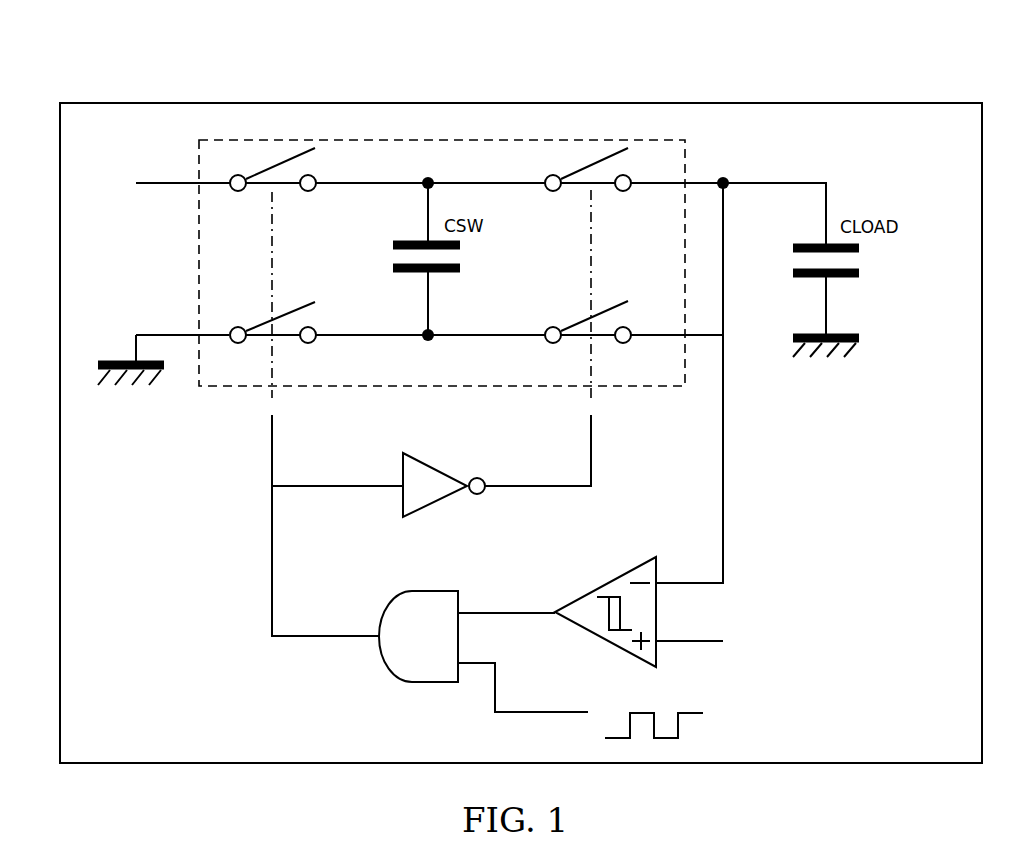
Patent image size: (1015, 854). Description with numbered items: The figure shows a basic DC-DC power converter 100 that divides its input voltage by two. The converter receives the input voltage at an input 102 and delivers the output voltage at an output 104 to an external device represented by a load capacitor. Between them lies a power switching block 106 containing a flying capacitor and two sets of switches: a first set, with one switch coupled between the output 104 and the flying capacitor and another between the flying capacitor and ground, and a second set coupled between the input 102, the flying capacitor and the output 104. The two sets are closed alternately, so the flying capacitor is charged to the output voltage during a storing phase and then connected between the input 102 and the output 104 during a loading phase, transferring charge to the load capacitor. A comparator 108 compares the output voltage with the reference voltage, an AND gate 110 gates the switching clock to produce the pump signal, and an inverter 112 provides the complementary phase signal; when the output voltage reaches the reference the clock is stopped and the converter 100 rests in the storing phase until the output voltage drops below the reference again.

The power converter 100 is at (150, 90).
The input 102 is at (180, 184).
The output 104 is at (792, 184).
The power switching block 106 is at (348, 138).
The comparator 108 is at (608, 580).
The AND gate 110 is at (385, 652).
The inverter 112 is at (438, 469).